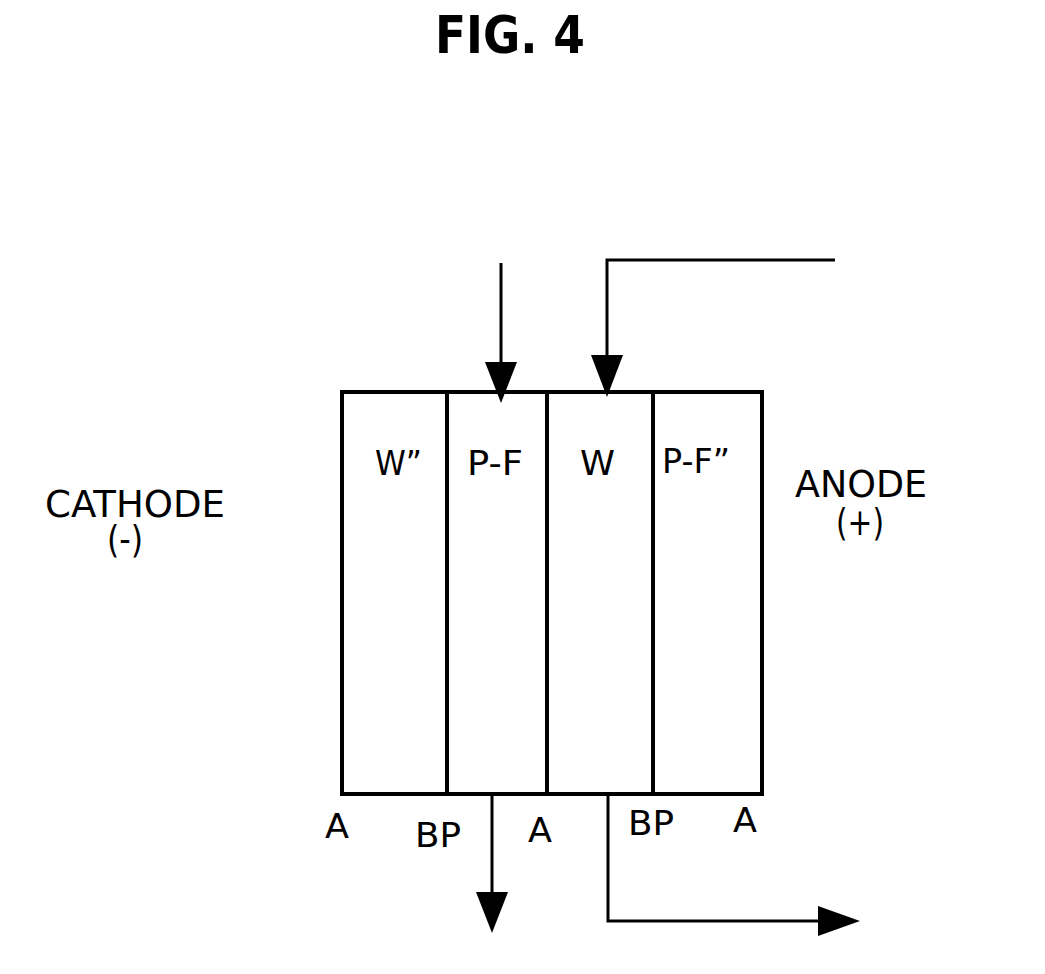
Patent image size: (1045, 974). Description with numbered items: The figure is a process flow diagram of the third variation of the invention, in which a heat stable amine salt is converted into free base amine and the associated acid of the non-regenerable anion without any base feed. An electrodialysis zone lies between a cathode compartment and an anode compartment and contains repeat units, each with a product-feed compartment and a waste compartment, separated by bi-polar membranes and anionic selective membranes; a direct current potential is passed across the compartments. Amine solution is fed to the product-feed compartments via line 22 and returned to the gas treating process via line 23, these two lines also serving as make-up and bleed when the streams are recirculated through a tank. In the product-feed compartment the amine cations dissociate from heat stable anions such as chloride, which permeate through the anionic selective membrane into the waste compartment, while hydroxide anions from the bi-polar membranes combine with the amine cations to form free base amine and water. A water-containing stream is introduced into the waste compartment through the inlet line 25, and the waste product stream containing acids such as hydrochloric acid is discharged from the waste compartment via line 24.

The line 22 is at (493, 303).
The line 23 is at (490, 884).
The line 24 is at (734, 883).
The water stream inlet to water compartment 25 is at (713, 298).